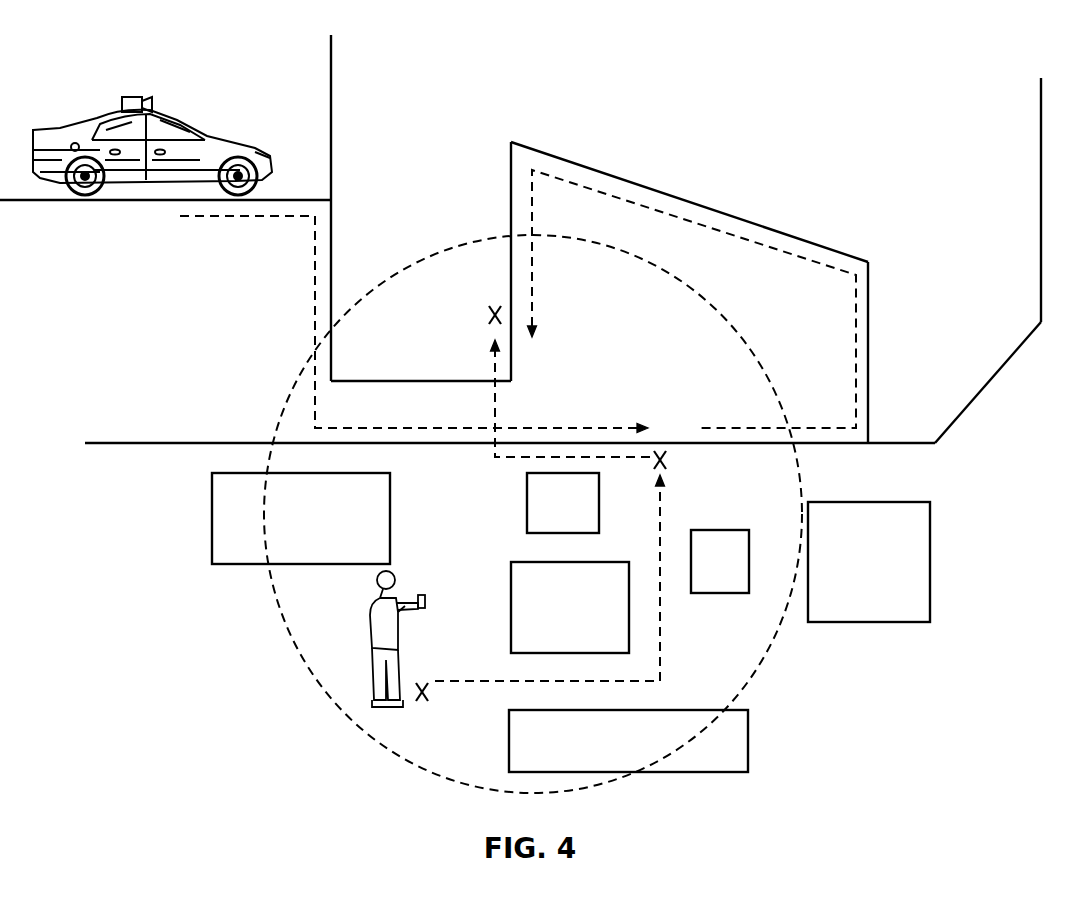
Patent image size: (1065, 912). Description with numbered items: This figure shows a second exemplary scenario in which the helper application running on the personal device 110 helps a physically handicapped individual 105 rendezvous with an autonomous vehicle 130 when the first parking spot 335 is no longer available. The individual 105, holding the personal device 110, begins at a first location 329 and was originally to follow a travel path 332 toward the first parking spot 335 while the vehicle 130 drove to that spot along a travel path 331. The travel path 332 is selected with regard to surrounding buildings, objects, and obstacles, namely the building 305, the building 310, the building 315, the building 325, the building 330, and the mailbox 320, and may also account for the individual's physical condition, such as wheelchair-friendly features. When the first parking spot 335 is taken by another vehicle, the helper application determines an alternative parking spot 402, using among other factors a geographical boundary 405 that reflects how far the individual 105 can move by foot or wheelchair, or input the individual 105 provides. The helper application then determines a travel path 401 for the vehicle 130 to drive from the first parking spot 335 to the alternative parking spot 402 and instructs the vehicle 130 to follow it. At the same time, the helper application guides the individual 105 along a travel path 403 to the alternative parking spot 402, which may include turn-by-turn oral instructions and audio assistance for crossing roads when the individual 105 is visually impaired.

The vehicle 130 is at (92, 91).
The physically handicapped individual 105 is at (358, 606).
The personal device 110 is at (424, 596).
The building 305 is at (301, 518).
The building 310 is at (563, 503).
The building 315 is at (570, 607).
The mailbox 320 is at (720, 561).
The building 325 is at (869, 562).
The building 330 is at (628, 741).
The first location 329 is at (442, 695).
The travel path 331 is at (545, 428).
The travel path 332 is at (662, 656).
The first parking spot 335 is at (680, 466).
The travel path 401 is at (777, 250).
The alternative parking spot 402 is at (478, 308).
The travel path 403 is at (518, 463).
The geographical boundary 405 is at (742, 322).